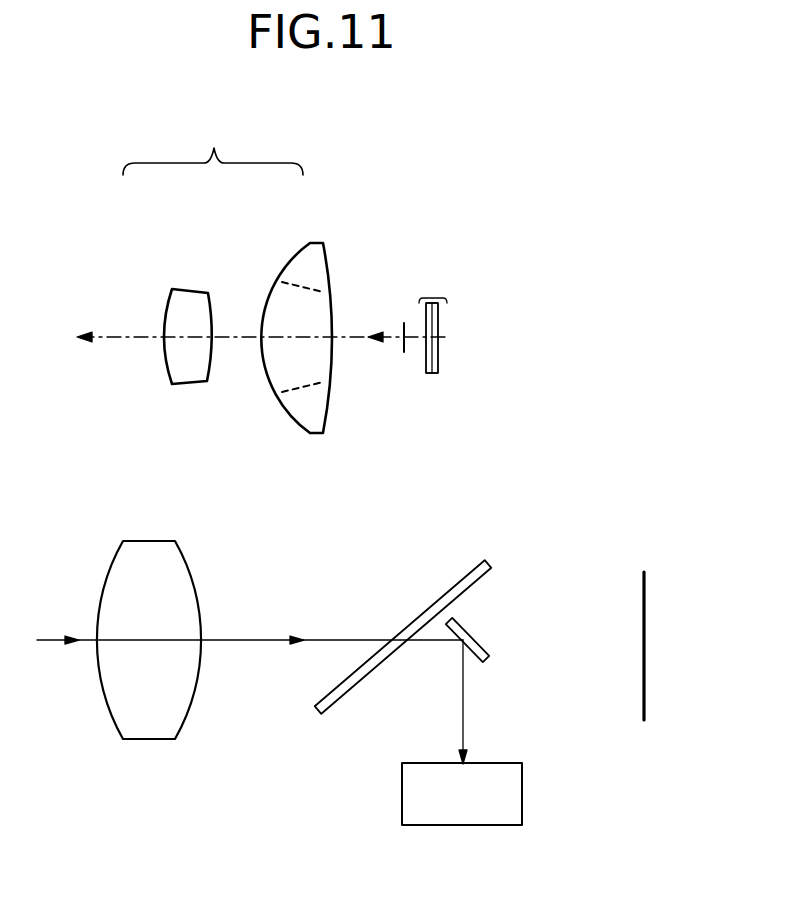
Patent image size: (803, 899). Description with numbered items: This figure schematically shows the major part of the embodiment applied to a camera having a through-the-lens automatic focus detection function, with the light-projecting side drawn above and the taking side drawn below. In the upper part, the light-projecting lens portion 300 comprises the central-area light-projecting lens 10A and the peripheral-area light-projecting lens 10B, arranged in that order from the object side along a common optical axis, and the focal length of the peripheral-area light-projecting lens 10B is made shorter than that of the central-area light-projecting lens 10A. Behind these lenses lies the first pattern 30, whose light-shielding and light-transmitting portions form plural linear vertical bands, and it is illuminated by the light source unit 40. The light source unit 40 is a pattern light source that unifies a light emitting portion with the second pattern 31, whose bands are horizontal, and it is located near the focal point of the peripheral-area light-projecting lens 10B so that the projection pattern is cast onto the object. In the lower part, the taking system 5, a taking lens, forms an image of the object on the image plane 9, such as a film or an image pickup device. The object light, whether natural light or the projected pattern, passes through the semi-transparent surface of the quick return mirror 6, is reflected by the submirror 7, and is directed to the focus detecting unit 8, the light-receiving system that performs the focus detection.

The light-projecting lens portion 300 is at (213, 146).
The central-area light-projecting lens 10A is at (172, 289).
The peripheral-area light-projecting lens 10B is at (288, 255).
The first pattern 30 is at (404, 324).
The second pattern 31 is at (427, 373).
The light source unit 40 is at (434, 297).
The taking system 5 is at (153, 741).
The quick return mirror 6 is at (470, 568).
The submirror 7 is at (491, 651).
The focus detecting unit 8 is at (522, 793).
The image plane 9 is at (644, 705).